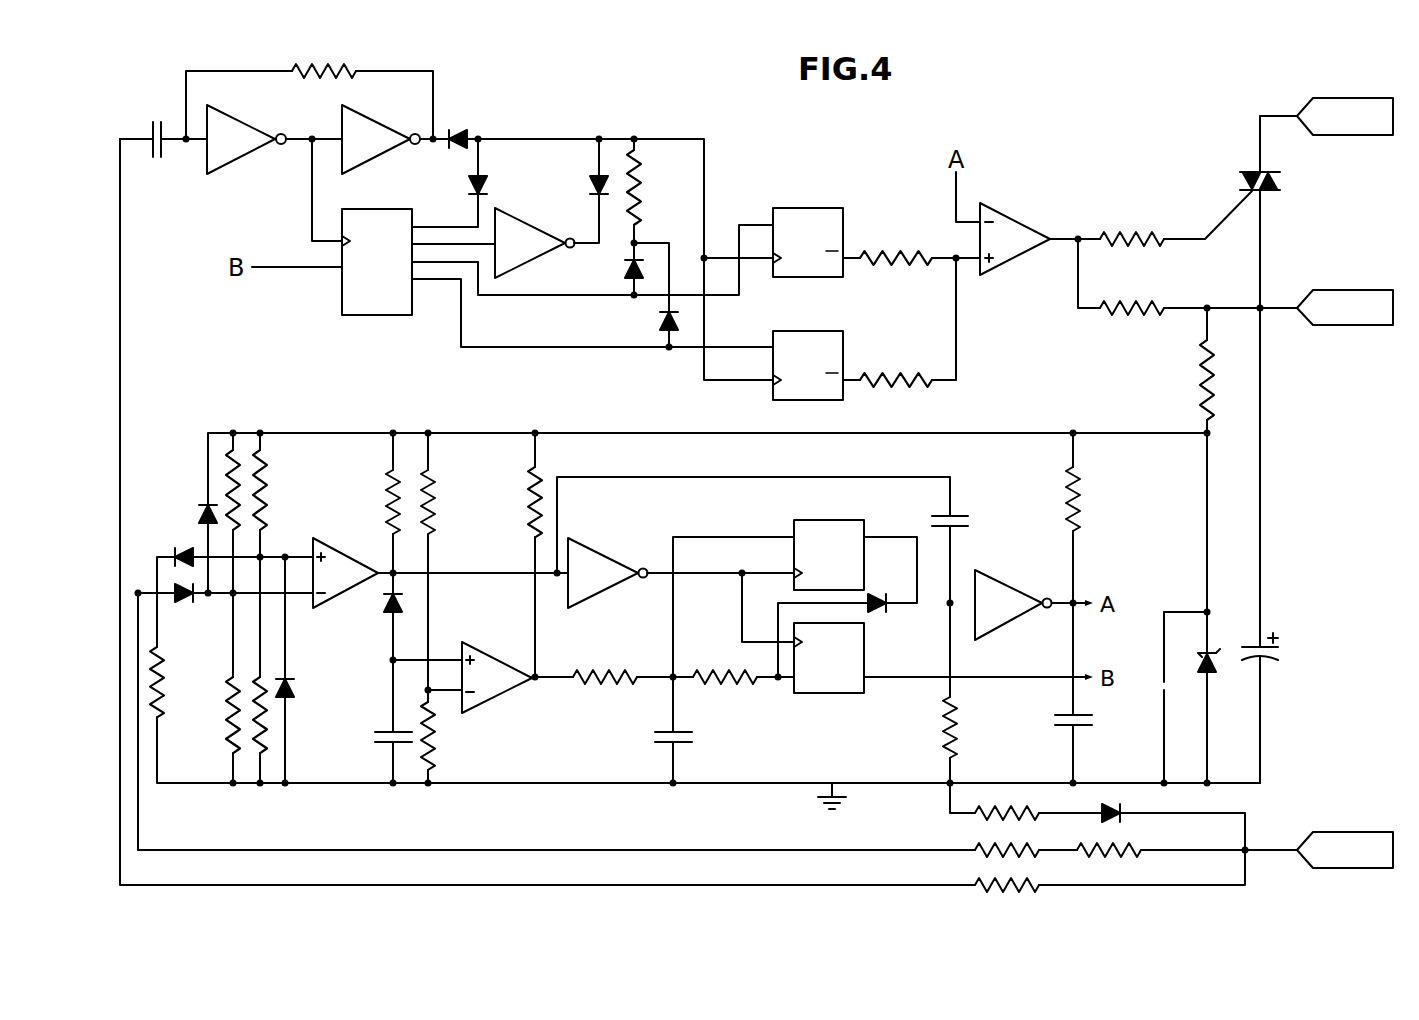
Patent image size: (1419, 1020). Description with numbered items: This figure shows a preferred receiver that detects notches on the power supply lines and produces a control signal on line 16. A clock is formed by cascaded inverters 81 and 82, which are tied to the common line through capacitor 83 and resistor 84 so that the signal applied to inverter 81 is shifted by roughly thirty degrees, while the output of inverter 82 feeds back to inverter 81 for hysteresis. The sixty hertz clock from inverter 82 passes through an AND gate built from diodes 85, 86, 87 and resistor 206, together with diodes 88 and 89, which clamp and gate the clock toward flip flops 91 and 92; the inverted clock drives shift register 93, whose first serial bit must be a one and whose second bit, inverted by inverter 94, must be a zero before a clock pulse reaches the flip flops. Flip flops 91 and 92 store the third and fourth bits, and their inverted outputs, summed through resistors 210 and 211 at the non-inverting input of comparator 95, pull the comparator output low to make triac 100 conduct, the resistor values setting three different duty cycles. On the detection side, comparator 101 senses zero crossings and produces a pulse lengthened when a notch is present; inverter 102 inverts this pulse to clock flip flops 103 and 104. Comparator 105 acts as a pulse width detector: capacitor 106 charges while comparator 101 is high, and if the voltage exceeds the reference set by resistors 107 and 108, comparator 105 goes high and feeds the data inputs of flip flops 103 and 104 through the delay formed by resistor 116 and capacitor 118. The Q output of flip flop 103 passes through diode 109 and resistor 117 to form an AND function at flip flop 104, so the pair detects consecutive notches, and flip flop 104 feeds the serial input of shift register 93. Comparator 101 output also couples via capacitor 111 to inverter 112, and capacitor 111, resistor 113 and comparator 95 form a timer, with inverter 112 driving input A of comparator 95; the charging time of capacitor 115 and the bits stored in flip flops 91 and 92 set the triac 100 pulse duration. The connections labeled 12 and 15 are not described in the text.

The terminal 12 is at (1345, 850).
The terminal 15 is at (1345, 307).
The line 16 is at (1345, 116).
The inverter 81 is at (246, 139).
The inverter 82 is at (381, 139).
The capacitor 83 is at (155, 122).
The resistor 84 is at (977, 880).
The diode 85 is at (464, 130).
The diode 86 is at (486, 190).
The diode 87 is at (590, 195).
The diode 88 is at (622, 270).
The diode 89 is at (656, 323).
The flip flop 91 is at (808, 242).
The flip flop 92 is at (808, 365).
The shift register 93 is at (377, 262).
The inverter 94 is at (535, 243).
The comparator 95 is at (1015, 239).
The triac 100 is at (1284, 183).
The comparator 101 is at (345, 573).
The inverter 102 is at (608, 573).
The flip flop 103 is at (829, 555).
The flip flop 104 is at (829, 658).
The comparator 105 is at (497, 677).
The capacitor 106 is at (372, 735).
The resistor 107 is at (438, 523).
The resistor 108 is at (440, 738).
The diode 109 is at (880, 614).
The capacitor 111 is at (972, 519).
The inverter 112 is at (1013, 605).
The resistor 113 is at (957, 703).
The capacitor 115 is at (1093, 722).
The resistor 116 is at (632, 685).
The resistor 117 is at (740, 668).
The capacitor 118 is at (698, 733).
The resistor 206 is at (646, 207).
The resistor 210 is at (876, 250).
The resistor 211 is at (876, 372).